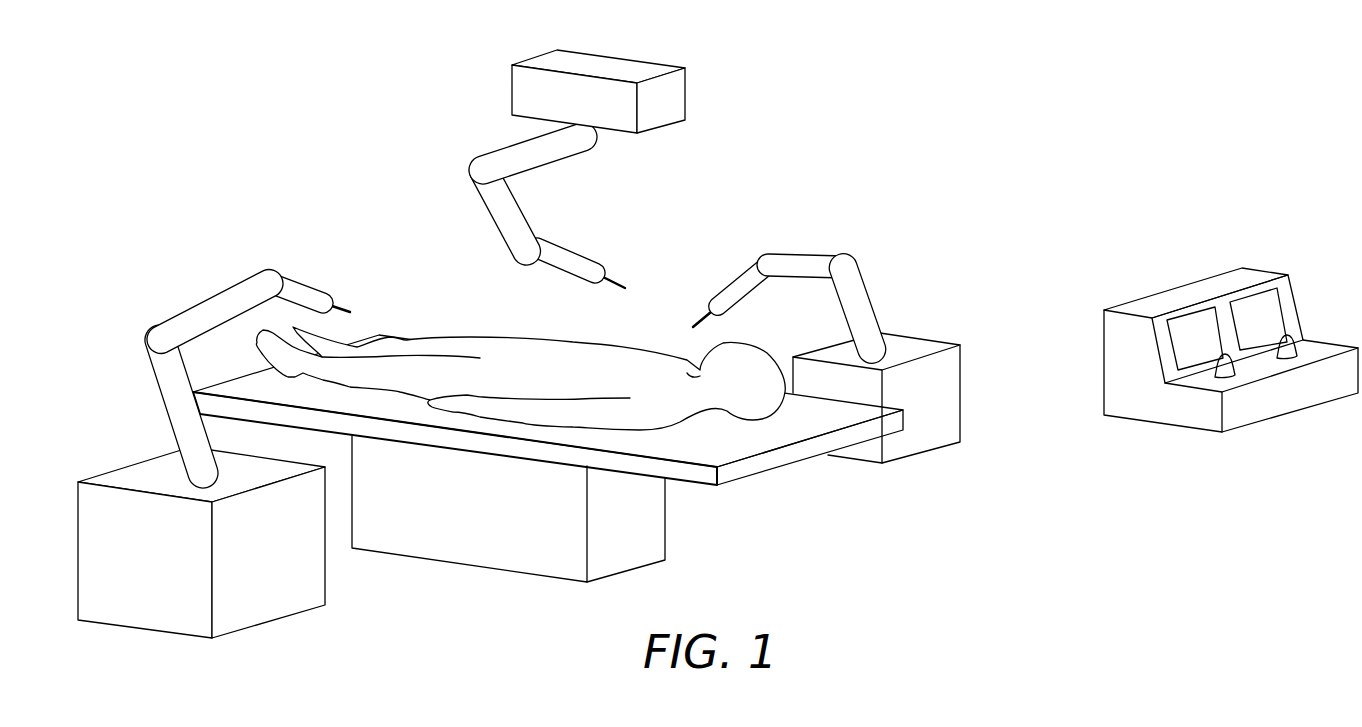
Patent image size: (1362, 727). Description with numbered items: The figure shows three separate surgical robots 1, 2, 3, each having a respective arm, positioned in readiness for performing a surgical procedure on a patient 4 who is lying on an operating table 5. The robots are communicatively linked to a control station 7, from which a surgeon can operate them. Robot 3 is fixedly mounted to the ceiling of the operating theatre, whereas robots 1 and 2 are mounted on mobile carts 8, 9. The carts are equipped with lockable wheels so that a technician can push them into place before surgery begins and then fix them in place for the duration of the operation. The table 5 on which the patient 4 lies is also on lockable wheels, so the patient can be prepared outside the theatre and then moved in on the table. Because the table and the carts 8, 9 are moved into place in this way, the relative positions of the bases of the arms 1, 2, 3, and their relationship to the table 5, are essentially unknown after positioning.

The surgical robot 1 is at (121, 336).
The surgical robot 2 is at (847, 238).
The surgical robot 3 is at (450, 163).
The patient 4 is at (483, 342).
The operating table 5 is at (783, 458).
The control station 7 is at (1172, 295).
The mobile cart 8 is at (317, 582).
The mobile cart 9 is at (952, 362).